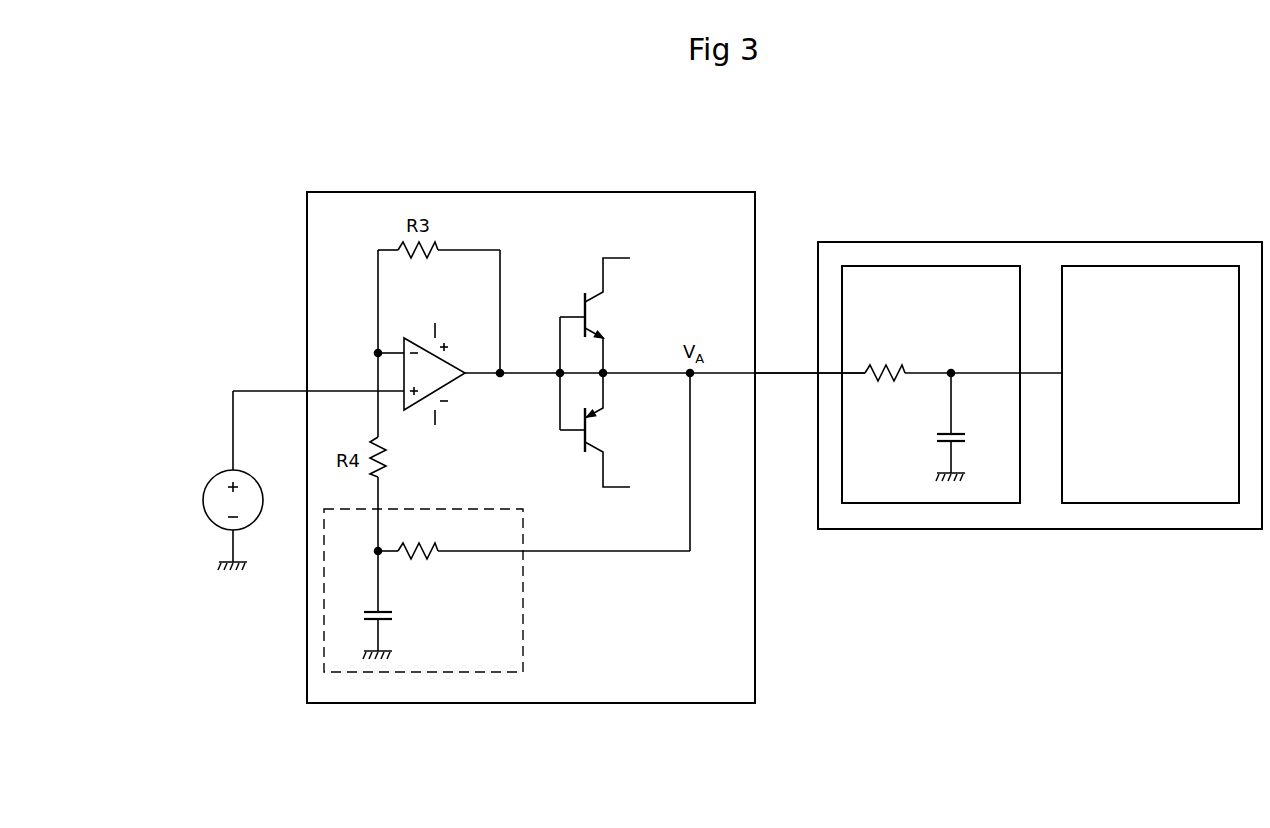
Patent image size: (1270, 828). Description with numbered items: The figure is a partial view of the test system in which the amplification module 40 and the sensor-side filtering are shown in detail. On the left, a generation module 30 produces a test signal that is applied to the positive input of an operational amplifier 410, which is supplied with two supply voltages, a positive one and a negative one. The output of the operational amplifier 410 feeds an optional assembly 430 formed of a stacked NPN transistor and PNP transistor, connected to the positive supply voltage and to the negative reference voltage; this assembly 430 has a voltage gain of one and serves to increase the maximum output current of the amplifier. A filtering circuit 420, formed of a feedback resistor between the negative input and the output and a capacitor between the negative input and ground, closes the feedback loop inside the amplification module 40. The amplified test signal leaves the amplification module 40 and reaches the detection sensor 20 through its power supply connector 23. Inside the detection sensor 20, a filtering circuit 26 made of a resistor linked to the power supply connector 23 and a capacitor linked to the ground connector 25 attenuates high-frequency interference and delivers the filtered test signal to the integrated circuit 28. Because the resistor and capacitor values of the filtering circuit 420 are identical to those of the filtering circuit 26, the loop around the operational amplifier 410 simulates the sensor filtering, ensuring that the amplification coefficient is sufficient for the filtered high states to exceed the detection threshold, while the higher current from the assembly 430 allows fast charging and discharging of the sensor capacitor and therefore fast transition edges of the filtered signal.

The detection sensor 20 is at (1043, 242).
The power supply connector 23 is at (777, 373).
The ground connector 25 is at (963, 480).
The filtering circuit 26 is at (915, 266).
The integrated circuit 28 is at (1168, 266).
The generation module 30 is at (209, 520).
The amplification module 40 is at (615, 192).
The operational amplifier 410 is at (453, 380).
The filtering circuit 420 is at (523, 615).
The assembly 430 is at (573, 300).